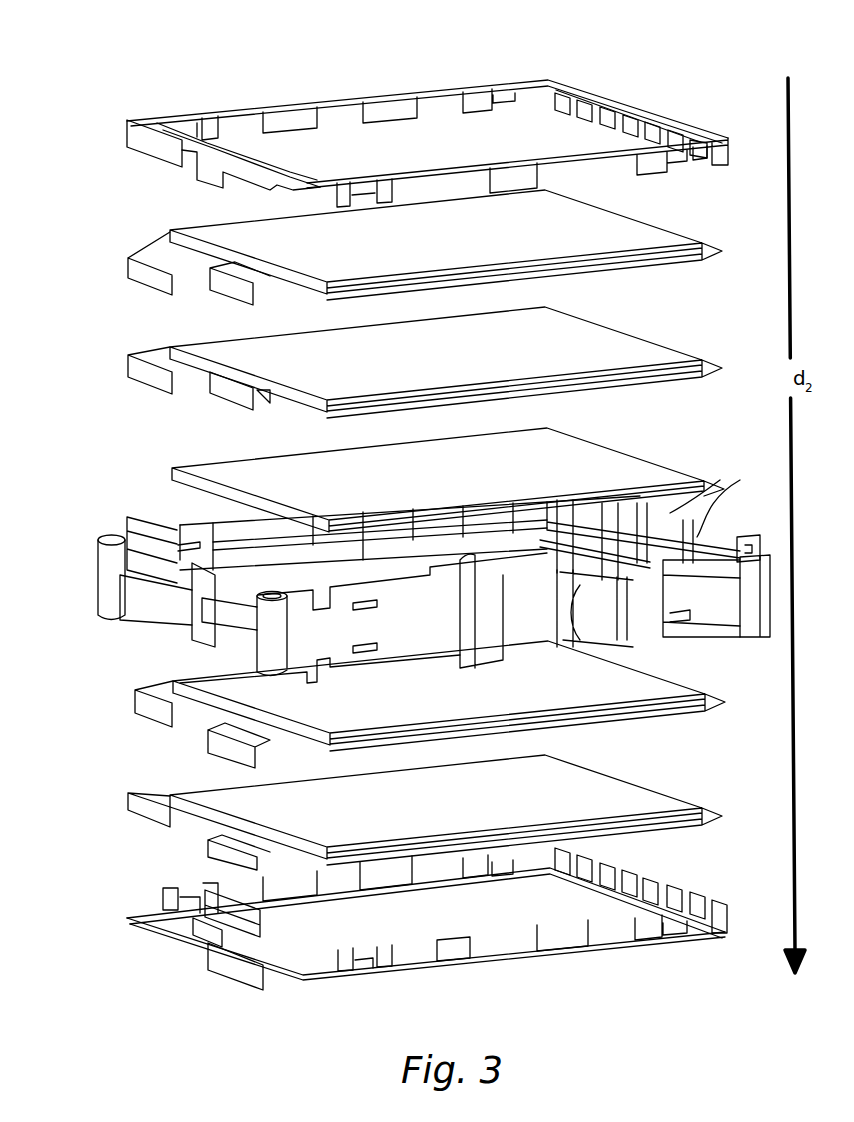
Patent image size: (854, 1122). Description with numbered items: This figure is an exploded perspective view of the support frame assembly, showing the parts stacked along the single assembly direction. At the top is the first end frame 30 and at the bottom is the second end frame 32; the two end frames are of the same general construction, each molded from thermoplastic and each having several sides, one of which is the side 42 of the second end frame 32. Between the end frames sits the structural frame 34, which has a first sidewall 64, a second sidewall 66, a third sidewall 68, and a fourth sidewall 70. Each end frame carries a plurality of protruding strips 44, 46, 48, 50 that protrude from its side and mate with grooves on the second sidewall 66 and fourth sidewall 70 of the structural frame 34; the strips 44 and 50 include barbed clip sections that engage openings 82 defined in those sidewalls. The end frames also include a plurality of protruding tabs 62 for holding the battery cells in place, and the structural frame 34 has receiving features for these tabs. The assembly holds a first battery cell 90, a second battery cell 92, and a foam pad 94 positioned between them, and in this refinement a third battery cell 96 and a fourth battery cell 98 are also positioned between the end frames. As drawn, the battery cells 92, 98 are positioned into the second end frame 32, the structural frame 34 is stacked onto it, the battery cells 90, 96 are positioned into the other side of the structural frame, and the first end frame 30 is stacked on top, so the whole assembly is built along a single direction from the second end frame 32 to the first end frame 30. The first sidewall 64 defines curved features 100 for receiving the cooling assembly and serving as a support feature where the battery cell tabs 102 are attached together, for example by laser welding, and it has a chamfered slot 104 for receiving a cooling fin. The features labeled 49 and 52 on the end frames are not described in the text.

The first end frame 30 is at (140, 93).
The second end frame 32 is at (648, 958).
The structural frame 34 is at (389, 562).
The side 42 is at (205, 180).
The protruding strip 44 is at (484, 98).
The protruding strip 46 is at (392, 108).
The protruding strip 48 is at (290, 115).
The tab 49 is at (452, 958).
The protruding strip 50 is at (210, 118).
The tab 52 is at (195, 938).
The protruding tabs 62 is at (640, 130).
The first sidewall 64 is at (168, 622).
The second sidewall 66 is at (205, 515).
The third sidewall 68 is at (728, 530).
The fourth sidewall 70 is at (655, 643).
The openings 82 is at (188, 546).
The first battery cell 90 is at (437, 362).
The second battery cell 92 is at (445, 701).
The foam pad 94 is at (420, 484).
The third battery cell 96 is at (414, 251).
The fourth battery cell 98 is at (463, 816).
The curved features 100 is at (135, 592).
The battery cell tabs 102 is at (128, 270).
The chamfered slot 104 is at (210, 845).